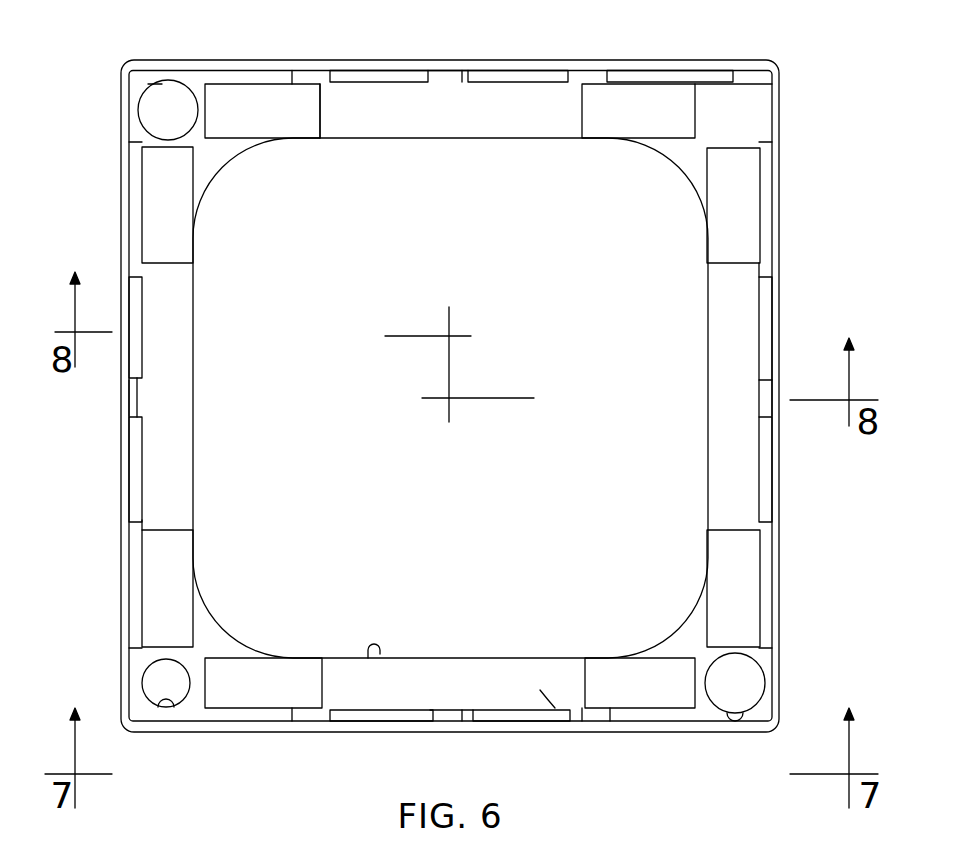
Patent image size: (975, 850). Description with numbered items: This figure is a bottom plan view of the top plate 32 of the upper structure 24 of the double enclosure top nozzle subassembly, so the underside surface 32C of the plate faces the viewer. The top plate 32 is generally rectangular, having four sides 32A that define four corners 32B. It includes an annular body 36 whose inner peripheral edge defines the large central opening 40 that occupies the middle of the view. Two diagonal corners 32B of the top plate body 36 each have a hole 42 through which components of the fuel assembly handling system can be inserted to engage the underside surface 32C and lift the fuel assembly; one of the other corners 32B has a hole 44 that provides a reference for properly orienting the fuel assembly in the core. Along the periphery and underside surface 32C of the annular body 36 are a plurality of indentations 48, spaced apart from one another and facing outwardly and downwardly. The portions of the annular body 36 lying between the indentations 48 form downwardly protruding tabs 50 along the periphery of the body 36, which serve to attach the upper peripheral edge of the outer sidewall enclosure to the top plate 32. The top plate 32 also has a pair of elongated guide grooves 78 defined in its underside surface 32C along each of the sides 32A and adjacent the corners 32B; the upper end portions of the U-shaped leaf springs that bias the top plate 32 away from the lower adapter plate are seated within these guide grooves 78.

The upper structure 24 is at (566, 46).
The top plate 32 is at (466, 52).
The sides 32A is at (438, 82).
The corners 32B is at (742, 98).
The underside surface 32C is at (547, 690).
The annular body 36 is at (538, 117).
The central opening 40 is at (384, 656).
The hole 42 is at (170, 82).
The hole 44 is at (167, 704).
The indentations 48 is at (380, 78).
The tabs 50 is at (320, 84).
The guide grooves 78 is at (256, 100).